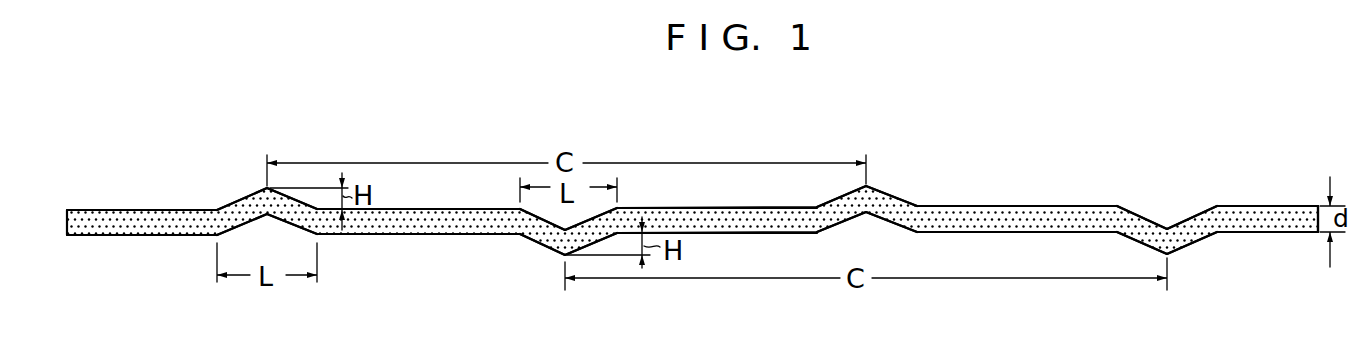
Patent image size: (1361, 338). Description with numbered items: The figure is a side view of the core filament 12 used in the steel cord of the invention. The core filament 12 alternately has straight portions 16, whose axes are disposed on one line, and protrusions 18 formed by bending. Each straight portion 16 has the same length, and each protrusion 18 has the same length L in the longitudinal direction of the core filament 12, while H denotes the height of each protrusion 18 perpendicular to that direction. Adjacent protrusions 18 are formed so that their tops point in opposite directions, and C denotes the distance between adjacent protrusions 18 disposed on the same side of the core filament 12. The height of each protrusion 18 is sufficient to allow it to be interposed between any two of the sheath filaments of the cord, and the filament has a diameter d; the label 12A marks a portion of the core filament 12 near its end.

The core filament 12 is at (1228, 130).
The strip body portion 12A is at (1290, 215).
The straight portions 16 is at (135, 210).
The protrusions 18 is at (265, 188).